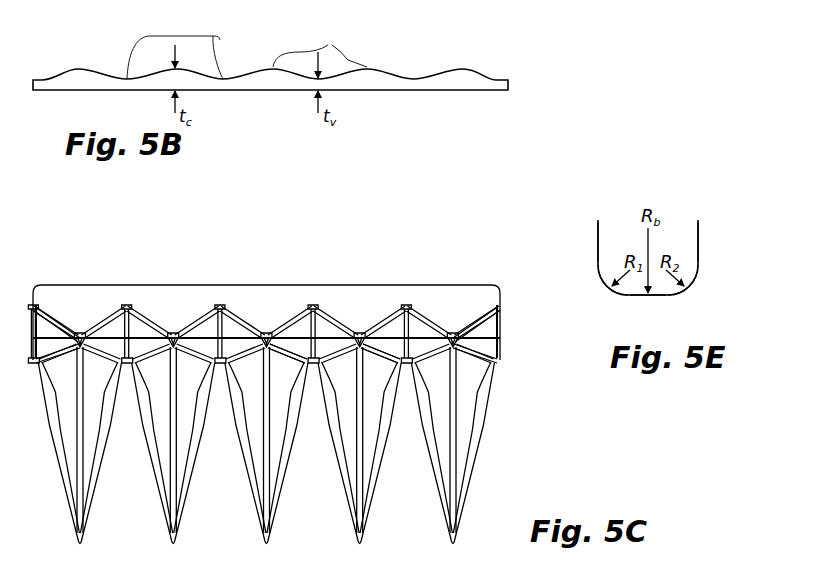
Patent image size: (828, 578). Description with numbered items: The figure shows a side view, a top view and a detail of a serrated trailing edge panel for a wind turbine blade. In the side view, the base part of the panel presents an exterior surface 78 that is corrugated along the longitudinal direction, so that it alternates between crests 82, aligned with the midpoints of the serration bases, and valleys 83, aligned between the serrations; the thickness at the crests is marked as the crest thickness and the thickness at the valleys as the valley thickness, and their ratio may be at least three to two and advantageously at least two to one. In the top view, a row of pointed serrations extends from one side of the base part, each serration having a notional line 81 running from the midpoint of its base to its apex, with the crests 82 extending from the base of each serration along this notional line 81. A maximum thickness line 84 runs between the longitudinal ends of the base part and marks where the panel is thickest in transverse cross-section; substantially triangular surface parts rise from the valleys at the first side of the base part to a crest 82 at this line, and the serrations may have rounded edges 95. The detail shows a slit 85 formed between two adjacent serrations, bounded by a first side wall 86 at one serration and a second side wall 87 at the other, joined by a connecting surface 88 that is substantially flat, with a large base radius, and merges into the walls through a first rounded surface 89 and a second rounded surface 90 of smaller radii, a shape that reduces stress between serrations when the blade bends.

In FIG. 5C, the exterior surface 78 is at (278, 297).
In FIG. 5C, the notional line 81 is at (358, 490).
In FIG. 5B, the crests 82 is at (320, 47).
In FIG. 5C, the crests 82 is at (367, 355).
In FIG. 5B, the valleys 83 is at (184, 53).
In FIG. 5C, the maximum thickness line 84 is at (135, 338).
In FIG. 5E, the slit 85 is at (633, 188).
In FIG. 5E, the first side wall 86 is at (602, 232).
In FIG. 5E, the second side wall 87 is at (697, 232).
In FIG. 5E, the connecting surface 88 is at (638, 296).
In FIG. 5E, the first rounded surface 89 is at (605, 280).
In FIG. 5E, the second rounded surface 90 is at (681, 296).
In FIG. 5C, the rounded edges 95 is at (467, 473).